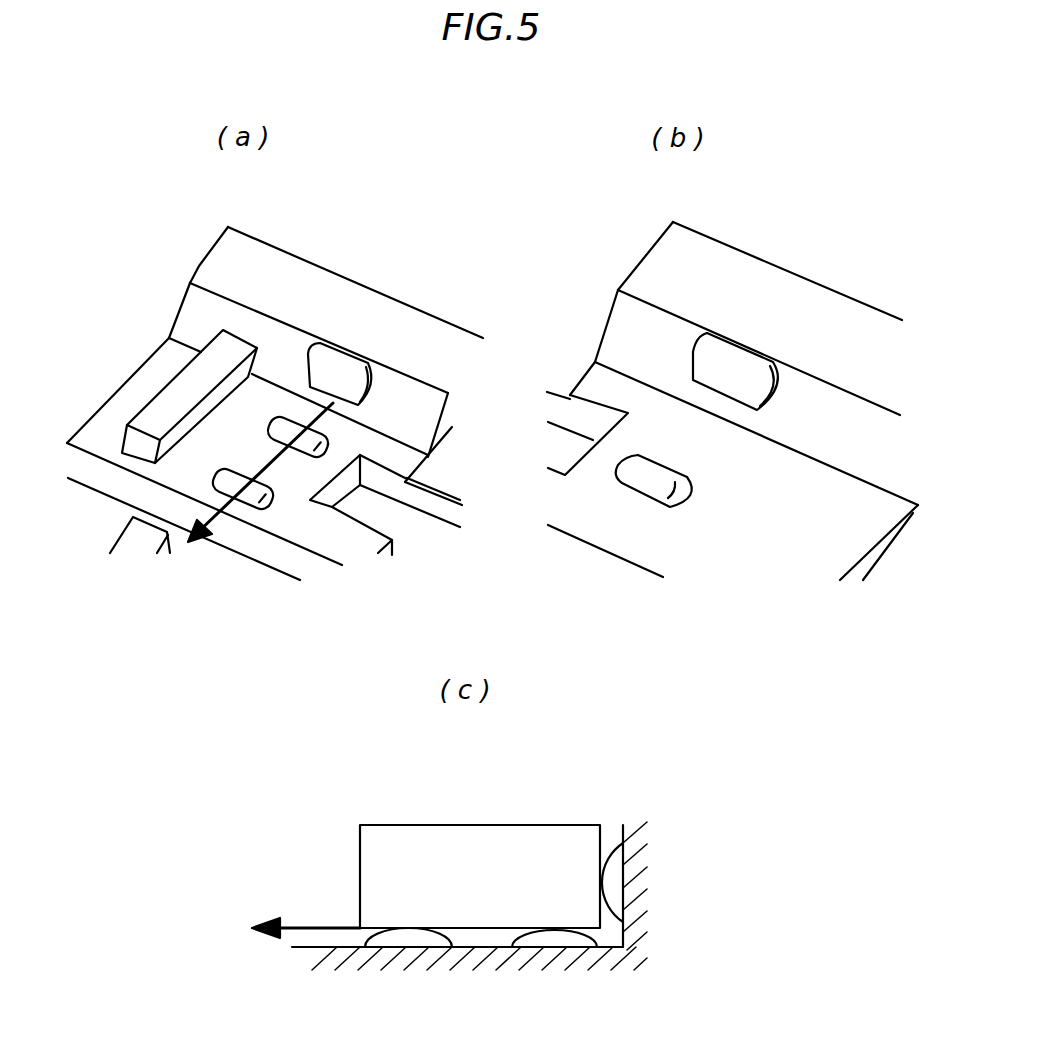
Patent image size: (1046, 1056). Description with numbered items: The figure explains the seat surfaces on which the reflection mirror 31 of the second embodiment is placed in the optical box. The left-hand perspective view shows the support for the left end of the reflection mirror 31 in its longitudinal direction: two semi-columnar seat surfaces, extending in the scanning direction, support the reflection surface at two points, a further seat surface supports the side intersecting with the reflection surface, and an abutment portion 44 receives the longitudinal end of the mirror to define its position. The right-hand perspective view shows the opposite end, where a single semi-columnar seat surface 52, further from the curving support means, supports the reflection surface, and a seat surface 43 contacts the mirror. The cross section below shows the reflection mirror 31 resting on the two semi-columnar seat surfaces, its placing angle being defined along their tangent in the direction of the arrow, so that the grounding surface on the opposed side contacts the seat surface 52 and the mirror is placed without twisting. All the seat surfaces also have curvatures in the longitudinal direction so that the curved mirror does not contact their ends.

The reflection mirror 31 is at (487, 825).
The seat surface 43 is at (738, 362).
The abutment portion 44 is at (183, 397).
The seat surface 52 is at (673, 477).